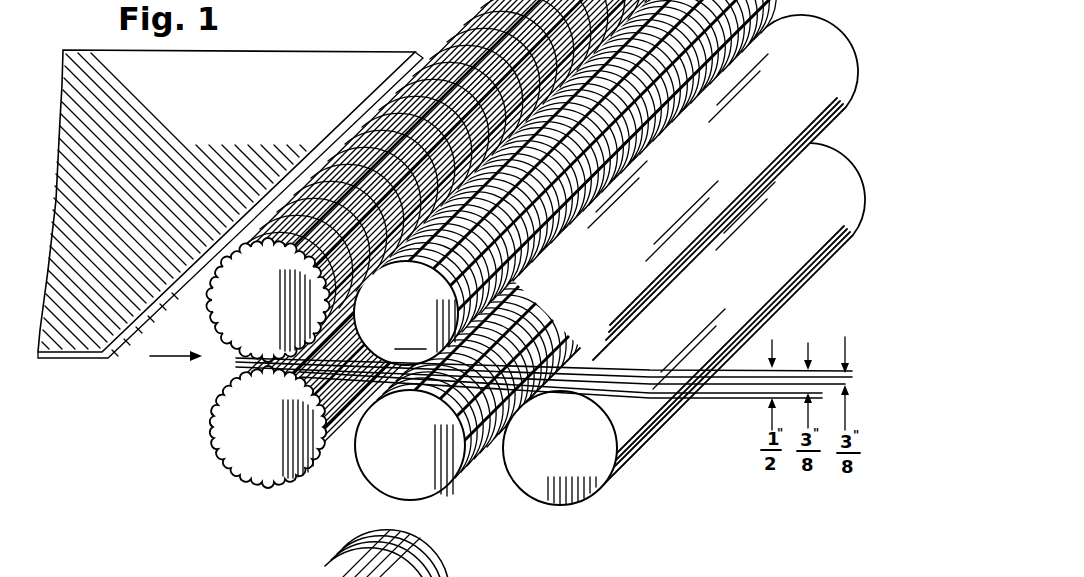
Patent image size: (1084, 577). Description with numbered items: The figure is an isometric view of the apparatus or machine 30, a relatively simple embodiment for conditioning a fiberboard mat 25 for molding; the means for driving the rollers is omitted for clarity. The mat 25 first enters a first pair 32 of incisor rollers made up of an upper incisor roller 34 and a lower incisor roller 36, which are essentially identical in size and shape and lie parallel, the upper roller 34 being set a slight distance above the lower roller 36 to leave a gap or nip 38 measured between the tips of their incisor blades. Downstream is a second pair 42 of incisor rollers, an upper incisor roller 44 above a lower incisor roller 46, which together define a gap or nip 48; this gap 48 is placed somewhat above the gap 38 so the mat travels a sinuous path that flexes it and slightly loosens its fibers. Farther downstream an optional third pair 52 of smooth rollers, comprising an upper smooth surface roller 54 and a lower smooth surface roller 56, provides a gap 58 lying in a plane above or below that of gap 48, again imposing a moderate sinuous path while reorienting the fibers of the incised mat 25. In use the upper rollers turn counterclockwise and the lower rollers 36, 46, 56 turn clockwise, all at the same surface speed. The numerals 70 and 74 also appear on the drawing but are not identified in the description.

The fiberboard mat 25 is at (198, 172).
The apparatus or machine 30 is at (456, 41).
The first pair of incisor rollers 32 is at (193, 392).
The upper incisor roller 34 is at (215, 300).
The lower incisor roller 36 is at (257, 465).
The gap or nip 38 is at (246, 362).
The second pair of incisor rollers 42 is at (348, 459).
The upper incisor roller 44 is at (708, 26).
The lower incisor roller 46 is at (430, 490).
The gap or nip 48 is at (333, 462).
The third pair of smooth rollers 52 is at (542, 507).
The upper smooth surface roller 54 is at (818, 99).
The lower smooth surface roller 56 is at (776, 270).
The gap 58 is at (622, 418).
The second station roll 70 is at (657, 573).
The second station roll 74 is at (454, 568).